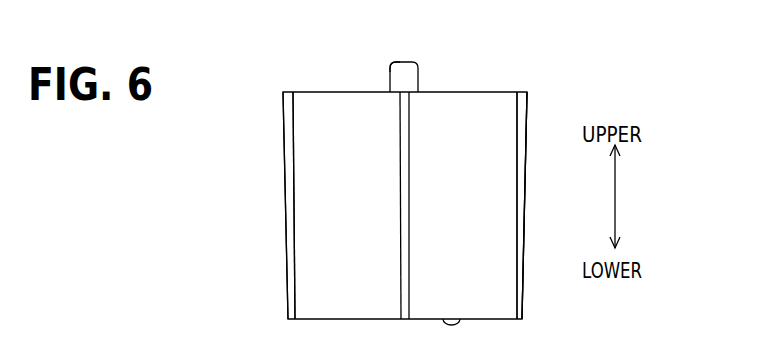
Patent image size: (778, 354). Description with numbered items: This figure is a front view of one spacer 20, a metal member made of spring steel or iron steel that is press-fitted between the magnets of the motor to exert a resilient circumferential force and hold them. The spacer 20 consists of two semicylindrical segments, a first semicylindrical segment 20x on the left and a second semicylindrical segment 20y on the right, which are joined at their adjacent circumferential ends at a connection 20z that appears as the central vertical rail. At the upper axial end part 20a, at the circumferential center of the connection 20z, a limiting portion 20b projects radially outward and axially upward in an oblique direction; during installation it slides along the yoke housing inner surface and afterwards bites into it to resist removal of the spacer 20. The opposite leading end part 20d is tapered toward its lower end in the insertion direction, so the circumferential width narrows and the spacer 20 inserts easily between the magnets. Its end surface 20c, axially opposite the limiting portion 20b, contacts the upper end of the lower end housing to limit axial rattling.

The spacer 20 is at (303, 97).
The axial end part 20a is at (416, 83).
The limiting portion 20b is at (391, 67).
The end surface 20c is at (459, 318).
The leading end part 20d is at (527, 283).
The first semicylindrical segment 20x is at (308, 273).
The second semicylindrical segment 20y is at (494, 208).
The connection 20z is at (400, 171).